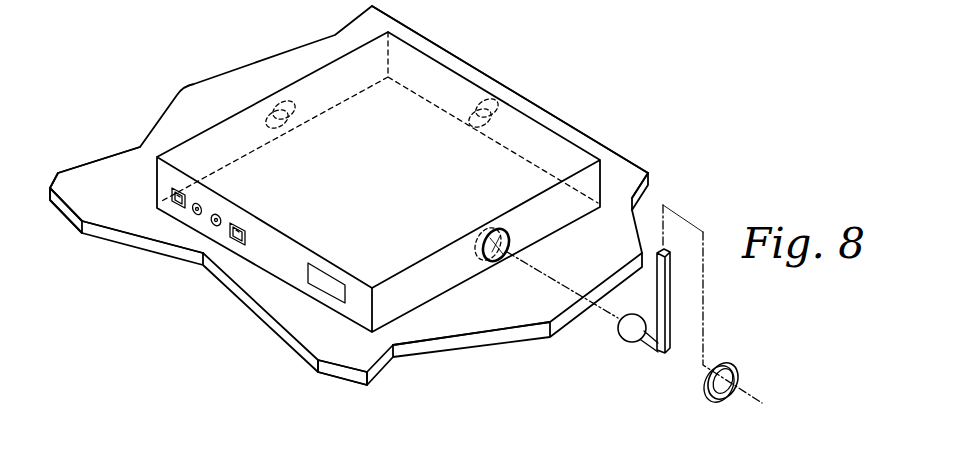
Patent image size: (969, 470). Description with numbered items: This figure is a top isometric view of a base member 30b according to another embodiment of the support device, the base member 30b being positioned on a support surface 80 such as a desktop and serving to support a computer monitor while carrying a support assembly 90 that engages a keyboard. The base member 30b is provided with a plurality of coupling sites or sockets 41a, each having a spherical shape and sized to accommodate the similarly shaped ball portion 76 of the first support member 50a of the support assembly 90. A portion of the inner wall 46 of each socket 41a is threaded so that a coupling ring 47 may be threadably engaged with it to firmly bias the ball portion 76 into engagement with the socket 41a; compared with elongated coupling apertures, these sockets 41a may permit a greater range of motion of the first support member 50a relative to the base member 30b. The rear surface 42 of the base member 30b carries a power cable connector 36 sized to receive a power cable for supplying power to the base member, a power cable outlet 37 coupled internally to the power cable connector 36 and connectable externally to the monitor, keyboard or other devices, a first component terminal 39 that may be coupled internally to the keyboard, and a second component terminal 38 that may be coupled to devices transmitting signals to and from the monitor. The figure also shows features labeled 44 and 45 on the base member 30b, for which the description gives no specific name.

The base member 30b is at (226, 111).
The sockets 41a is at (283, 104).
The mounting wings 44 is at (155, 183).
The support surface 80 is at (92, 208).
The rear surface 42 is at (356, 306).
The side edge 45 is at (601, 139).
The inner wall 46 is at (507, 250).
The power cable outlet 37 is at (182, 207).
The first component terminal 39 is at (198, 215).
The second component terminal 38 is at (220, 215).
The power cable connector 36 is at (243, 242).
The support assembly 90 is at (656, 238).
The first support member 50a is at (665, 360).
The ball portion 76 is at (622, 334).
The coupling ring 47 is at (724, 362).